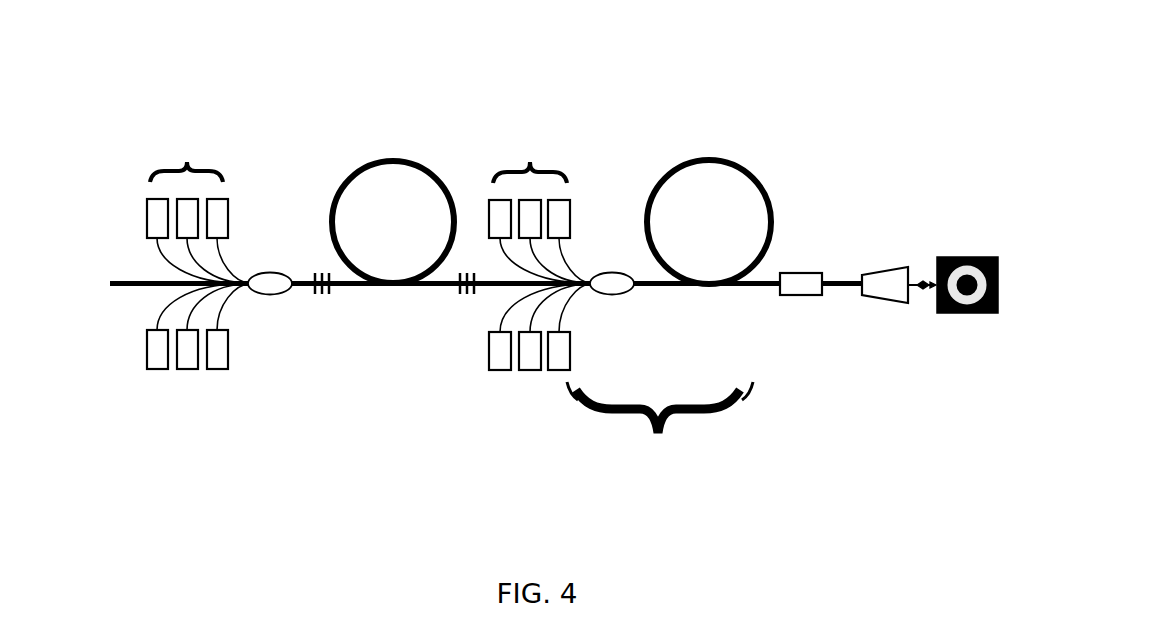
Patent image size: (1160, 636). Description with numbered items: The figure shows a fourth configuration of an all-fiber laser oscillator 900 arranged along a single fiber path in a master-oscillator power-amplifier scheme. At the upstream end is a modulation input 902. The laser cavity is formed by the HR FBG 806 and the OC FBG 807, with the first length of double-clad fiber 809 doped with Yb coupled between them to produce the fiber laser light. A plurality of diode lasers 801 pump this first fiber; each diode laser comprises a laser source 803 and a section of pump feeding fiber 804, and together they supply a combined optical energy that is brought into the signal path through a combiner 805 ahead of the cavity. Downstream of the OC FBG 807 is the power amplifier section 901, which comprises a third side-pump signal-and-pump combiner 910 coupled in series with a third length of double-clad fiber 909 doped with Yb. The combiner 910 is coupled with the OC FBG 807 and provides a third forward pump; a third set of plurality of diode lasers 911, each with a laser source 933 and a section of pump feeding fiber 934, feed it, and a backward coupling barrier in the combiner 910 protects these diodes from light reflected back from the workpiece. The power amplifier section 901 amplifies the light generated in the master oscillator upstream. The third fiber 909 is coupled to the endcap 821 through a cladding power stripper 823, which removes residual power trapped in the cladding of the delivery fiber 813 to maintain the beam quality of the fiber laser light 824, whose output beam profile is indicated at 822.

The plurality of diode lasers 801 is at (187, 158).
The laser source 803 is at (212, 372).
The section of pump feeding fiber 804 is at (225, 308).
The pump combiner 805 is at (272, 270).
The HR FBG 806 is at (327, 293).
The OC FBG 807 is at (457, 295).
The first length of double-clad fiber doped with Yb 809 is at (410, 158).
The delivery fiber 813 is at (770, 278).
The endcap 821 is at (882, 303).
The output beam profile 822 is at (970, 257).
The cladding power stripper 823 is at (823, 273).
The fiber laser light 824 is at (923, 278).
The all-fiber laser oscillator 900 is at (595, 158).
The power amplifier section 901 is at (712, 420).
The modulation input 902 is at (108, 278).
The third length of double-clad fiber doped with Yb 909 is at (723, 160).
The third side-pump signal-and-pump combiner 910 is at (612, 272).
The third set of plurality of diode lasers 911 is at (530, 160).
The laser source 933 is at (572, 353).
The section of pump feeding fiber 934 is at (567, 312).